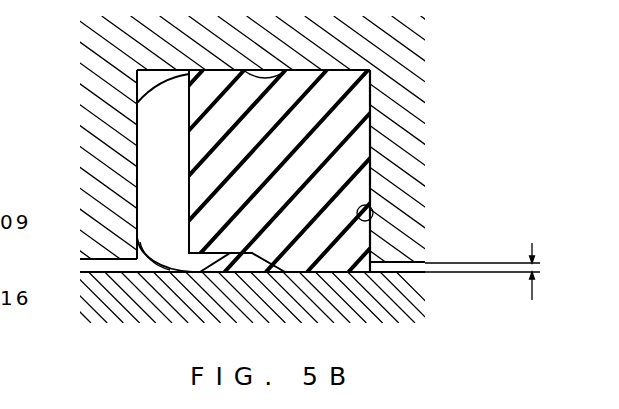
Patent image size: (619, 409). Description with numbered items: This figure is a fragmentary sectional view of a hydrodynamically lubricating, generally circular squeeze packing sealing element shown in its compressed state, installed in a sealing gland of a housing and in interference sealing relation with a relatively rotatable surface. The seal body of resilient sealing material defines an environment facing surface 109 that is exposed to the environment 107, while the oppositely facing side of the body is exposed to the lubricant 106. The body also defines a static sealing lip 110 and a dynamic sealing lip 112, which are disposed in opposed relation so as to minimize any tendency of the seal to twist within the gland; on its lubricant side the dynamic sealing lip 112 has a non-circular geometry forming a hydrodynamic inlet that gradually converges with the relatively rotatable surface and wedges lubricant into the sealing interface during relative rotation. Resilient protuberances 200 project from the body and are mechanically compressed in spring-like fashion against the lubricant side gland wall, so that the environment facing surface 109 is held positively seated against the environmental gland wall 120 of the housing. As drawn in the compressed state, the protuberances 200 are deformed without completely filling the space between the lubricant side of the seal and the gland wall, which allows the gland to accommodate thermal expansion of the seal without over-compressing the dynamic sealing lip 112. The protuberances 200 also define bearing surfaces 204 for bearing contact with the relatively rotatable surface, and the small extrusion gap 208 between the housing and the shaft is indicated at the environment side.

The lubricant 106 is at (148, 262).
The environment 107 is at (400, 268).
The environment facing surface 109 is at (370, 159).
The static sealing lip 110 is at (337, 77).
The dynamic sealing lip 112 is at (328, 262).
The environmental gland wall 120 is at (368, 216).
The resilient protuberances 200 is at (153, 164).
The bearing surfaces 204 is at (197, 272).
The extrusion gap 208 is at (486, 284).